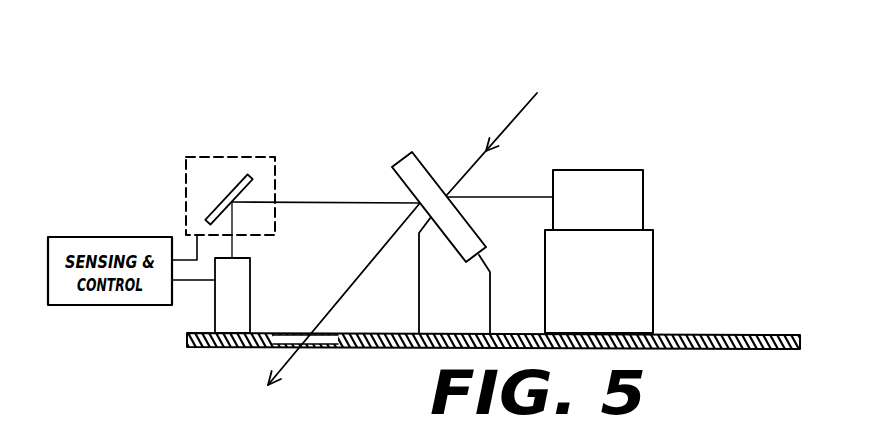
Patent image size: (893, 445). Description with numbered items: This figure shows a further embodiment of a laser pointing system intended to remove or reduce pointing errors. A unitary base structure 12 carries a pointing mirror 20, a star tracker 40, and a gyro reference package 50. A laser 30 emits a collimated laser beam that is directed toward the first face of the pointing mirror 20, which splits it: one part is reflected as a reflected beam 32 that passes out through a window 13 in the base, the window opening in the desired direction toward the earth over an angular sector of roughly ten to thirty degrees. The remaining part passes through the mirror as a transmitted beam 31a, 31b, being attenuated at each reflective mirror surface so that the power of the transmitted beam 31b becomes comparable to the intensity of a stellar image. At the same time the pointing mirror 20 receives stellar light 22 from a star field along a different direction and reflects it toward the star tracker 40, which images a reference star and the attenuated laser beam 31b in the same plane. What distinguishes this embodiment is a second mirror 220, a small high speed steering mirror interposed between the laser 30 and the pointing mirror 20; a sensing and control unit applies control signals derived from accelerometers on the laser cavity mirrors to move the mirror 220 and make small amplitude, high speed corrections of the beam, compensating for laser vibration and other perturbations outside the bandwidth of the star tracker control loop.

The unitary base structure 12 is at (712, 335).
The window 13 is at (298, 333).
The pointing mirror 20 is at (462, 235).
The stellar light 22 is at (512, 123).
The laser 30 is at (235, 288).
The transmitted beam 31a is at (436, 198).
The transmitted beam 31b is at (510, 196).
The reflected beam 32 is at (364, 270).
The star tracker 40 is at (607, 210).
The gyro reference package 50 is at (610, 296).
The second mirror 220 is at (247, 178).